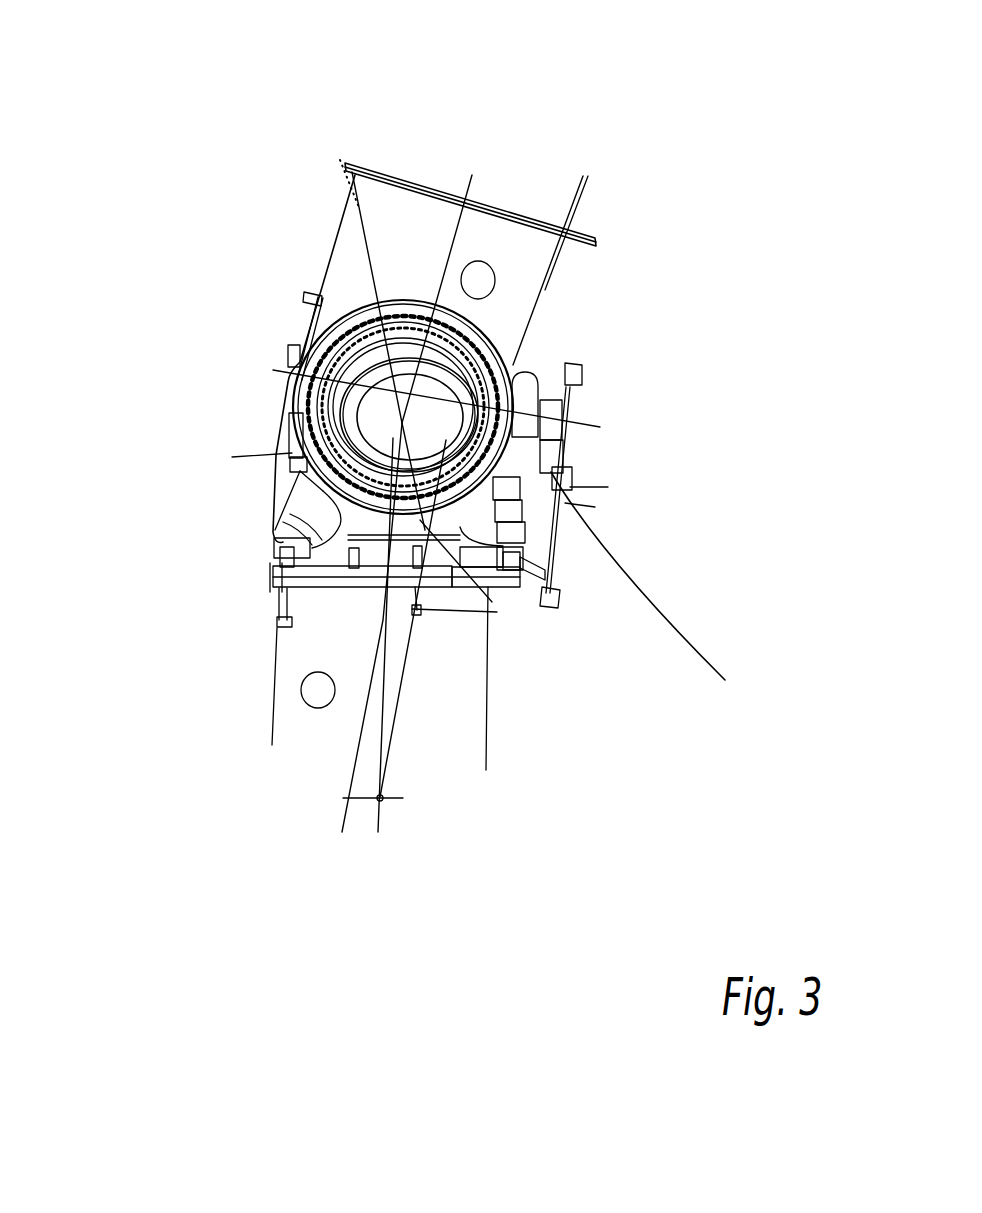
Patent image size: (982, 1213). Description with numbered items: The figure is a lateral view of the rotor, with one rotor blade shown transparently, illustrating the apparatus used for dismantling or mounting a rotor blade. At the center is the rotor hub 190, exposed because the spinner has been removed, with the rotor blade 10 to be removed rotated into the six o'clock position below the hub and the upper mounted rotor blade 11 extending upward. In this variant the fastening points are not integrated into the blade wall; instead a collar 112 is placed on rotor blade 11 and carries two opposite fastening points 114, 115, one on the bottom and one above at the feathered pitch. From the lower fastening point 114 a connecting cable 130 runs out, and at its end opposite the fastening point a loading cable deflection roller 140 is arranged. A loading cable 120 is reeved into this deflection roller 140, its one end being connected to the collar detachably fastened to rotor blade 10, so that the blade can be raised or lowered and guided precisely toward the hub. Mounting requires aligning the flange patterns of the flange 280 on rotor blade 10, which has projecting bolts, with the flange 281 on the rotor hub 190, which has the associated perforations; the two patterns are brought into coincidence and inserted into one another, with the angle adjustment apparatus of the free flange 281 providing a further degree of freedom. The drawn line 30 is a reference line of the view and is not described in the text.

The rotor hub 190 is at (212, 354).
The fastening point 115 is at (340, 165).
The collar 112 is at (493, 202).
The fastening point 114 is at (592, 242).
The connecting cable 130 is at (485, 342).
The loading cable deflection roller 140 is at (423, 548).
The loading cable 120 is at (392, 752).
The flange 280 is at (277, 618).
The flange 281 is at (282, 558).
The reference line 30 is at (662, 608).
The rotor blade 10 is at (319, 690).
The rotor blade 11 is at (480, 280).